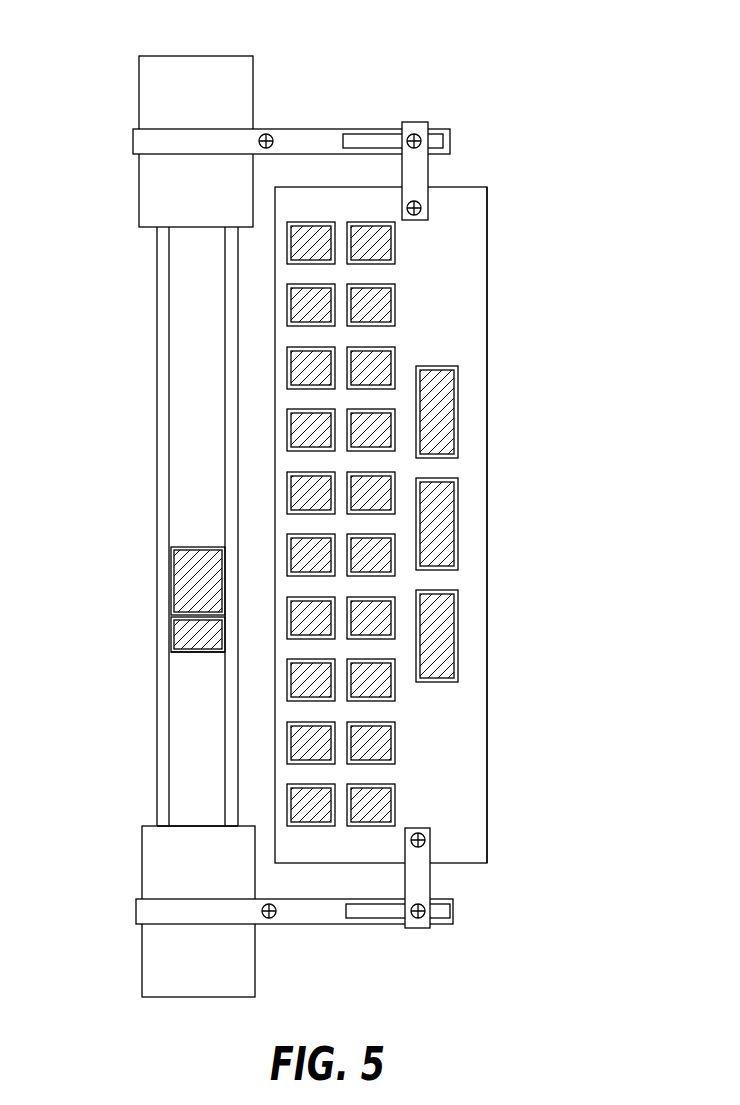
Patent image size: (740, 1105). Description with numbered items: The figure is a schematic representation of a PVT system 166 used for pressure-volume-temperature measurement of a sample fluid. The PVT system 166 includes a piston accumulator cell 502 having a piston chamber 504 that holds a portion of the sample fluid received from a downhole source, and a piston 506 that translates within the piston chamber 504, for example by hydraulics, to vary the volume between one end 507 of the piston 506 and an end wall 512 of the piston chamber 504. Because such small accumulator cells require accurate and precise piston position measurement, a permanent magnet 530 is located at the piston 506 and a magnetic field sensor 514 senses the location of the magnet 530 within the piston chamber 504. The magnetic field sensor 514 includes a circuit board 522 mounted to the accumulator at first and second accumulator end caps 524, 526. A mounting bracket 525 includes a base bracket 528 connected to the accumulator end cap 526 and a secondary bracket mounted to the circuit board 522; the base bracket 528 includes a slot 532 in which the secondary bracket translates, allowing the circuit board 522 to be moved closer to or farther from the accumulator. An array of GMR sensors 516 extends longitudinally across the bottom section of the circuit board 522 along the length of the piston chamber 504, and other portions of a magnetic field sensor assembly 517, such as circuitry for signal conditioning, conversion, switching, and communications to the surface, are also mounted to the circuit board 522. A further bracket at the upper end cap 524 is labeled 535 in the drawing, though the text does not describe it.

The PVT system 166 is at (113, 327).
The piston accumulator cell 502 is at (155, 450).
The piston chamber 504 is at (182, 760).
The piston 506 is at (180, 583).
The end of the piston 507 is at (197, 652).
The end wall 512 is at (180, 825).
The magnetic field sensor 514 is at (508, 257).
The GMR sensors 516 is at (287, 557).
The magnetic field sensor assembly 517 is at (468, 410).
The circuit board 522 is at (489, 327).
The first accumulator end cap 524 is at (152, 97).
The mounting bracket 525 is at (455, 933).
The second accumulator end cap 526 is at (153, 963).
The base bracket 528 is at (302, 897).
The permanent magnet 530 is at (178, 635).
The slot 532 is at (373, 910).
The upper clamp 535 is at (453, 115).